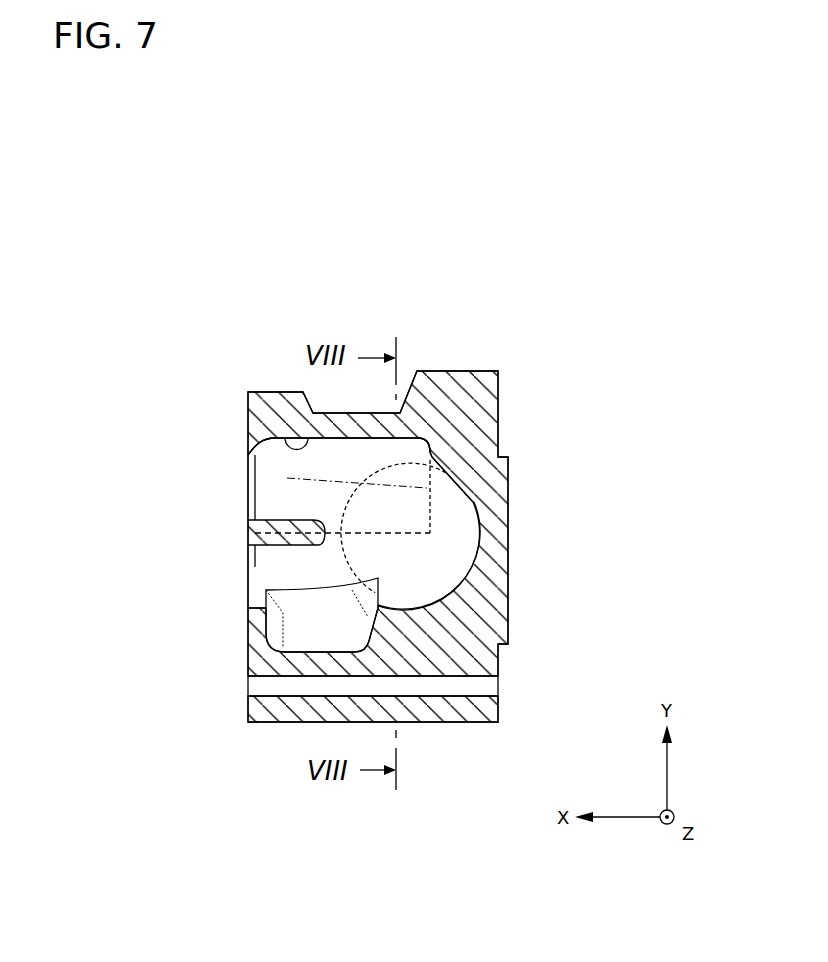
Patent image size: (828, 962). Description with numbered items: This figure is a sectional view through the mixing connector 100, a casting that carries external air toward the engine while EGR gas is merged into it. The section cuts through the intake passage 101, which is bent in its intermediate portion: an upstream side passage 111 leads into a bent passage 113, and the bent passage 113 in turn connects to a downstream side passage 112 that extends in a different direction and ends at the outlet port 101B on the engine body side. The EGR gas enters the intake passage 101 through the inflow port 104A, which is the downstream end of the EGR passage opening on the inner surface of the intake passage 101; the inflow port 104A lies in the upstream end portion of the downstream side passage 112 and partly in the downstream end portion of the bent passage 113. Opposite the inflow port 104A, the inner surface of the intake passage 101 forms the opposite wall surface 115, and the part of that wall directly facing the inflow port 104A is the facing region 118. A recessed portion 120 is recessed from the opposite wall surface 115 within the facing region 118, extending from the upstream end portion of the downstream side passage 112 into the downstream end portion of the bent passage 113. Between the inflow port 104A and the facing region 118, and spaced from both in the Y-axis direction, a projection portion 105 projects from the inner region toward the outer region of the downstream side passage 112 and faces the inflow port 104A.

The mixing connector 100 is at (158, 175).
The intake passage 101 is at (452, 597).
The outlet port 101B is at (256, 460).
The inflow port 104A is at (305, 640).
The projection portion 105 is at (278, 522).
The upstream side passage 111 is at (450, 567).
The downstream side passage 112 is at (272, 566).
The bent passage 113 is at (453, 537).
The opposite wall surface 115 is at (445, 481).
The facing region 118 is at (290, 440).
The recessed portion 120 is at (416, 438).